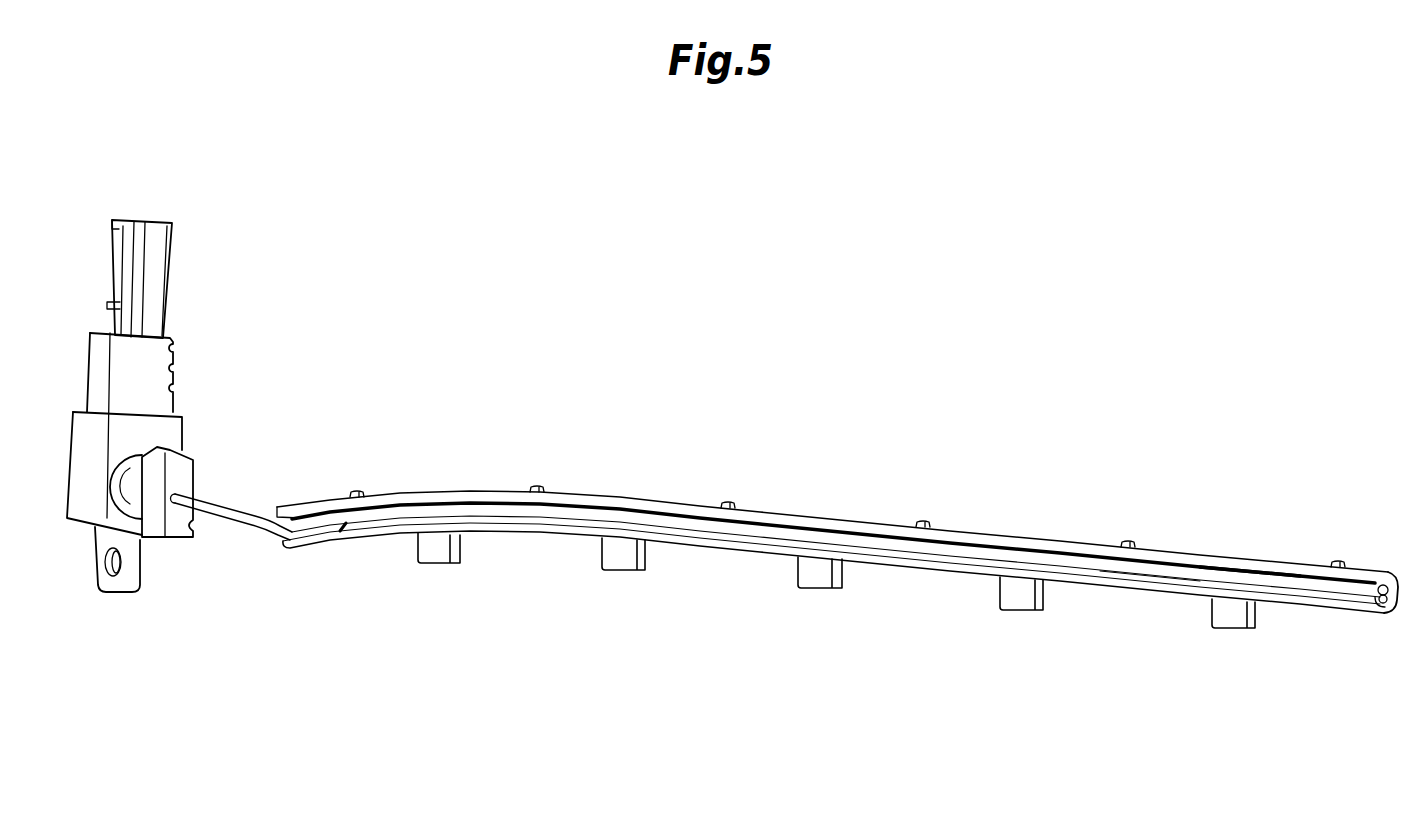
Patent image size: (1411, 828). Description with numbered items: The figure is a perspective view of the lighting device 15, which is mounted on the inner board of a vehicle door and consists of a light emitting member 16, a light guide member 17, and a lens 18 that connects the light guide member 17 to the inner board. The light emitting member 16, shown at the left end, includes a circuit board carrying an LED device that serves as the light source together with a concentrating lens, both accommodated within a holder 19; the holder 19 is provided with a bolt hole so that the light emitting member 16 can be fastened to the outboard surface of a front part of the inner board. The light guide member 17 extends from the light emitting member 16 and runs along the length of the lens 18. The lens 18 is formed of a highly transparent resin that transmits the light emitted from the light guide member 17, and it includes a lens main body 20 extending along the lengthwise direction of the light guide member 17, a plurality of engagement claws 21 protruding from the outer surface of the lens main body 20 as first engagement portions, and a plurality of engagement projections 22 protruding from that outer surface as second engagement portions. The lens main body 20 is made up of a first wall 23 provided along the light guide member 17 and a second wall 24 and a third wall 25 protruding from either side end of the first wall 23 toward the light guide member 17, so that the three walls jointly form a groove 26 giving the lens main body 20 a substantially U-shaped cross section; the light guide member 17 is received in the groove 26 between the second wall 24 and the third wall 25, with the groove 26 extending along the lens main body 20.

The lighting device 15 is at (788, 363).
The light emitting member 16 is at (72, 422).
The light guide member 17 is at (343, 530).
The lens 18 is at (635, 497).
The holder 19 is at (168, 433).
The lens main body 20 is at (845, 527).
The engagement claws 21 is at (357, 492).
The engagement projections 22 is at (438, 556).
The first wall 23 is at (1400, 605).
The second wall 24 is at (1242, 563).
The third wall 25 is at (1155, 588).
The groove 26 is at (1382, 585).